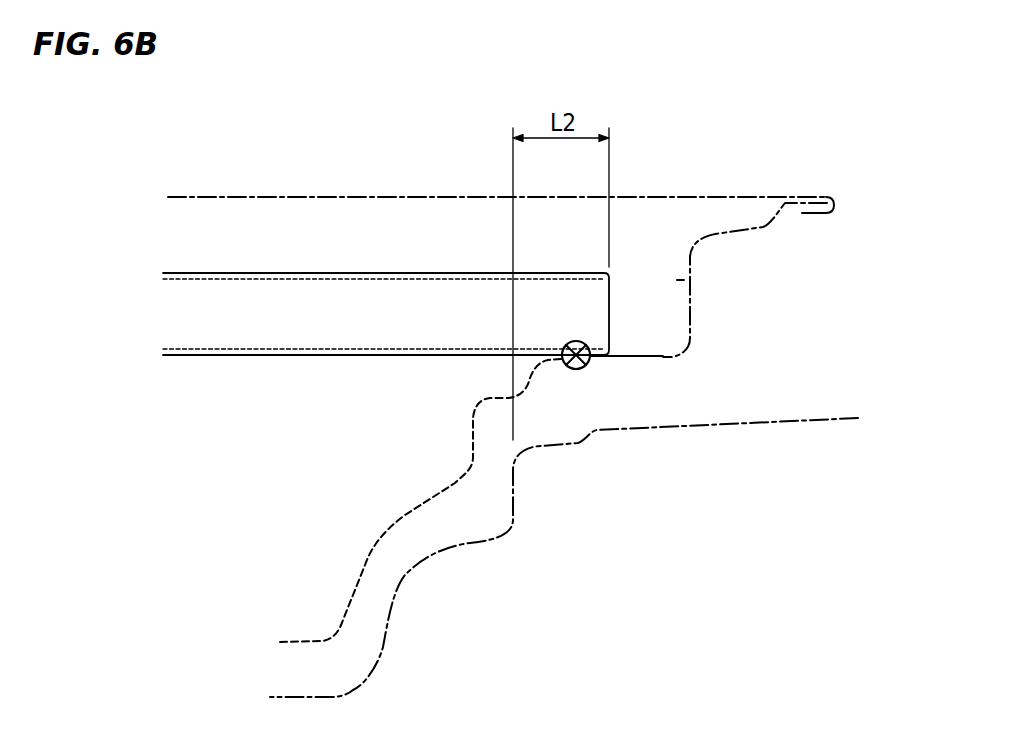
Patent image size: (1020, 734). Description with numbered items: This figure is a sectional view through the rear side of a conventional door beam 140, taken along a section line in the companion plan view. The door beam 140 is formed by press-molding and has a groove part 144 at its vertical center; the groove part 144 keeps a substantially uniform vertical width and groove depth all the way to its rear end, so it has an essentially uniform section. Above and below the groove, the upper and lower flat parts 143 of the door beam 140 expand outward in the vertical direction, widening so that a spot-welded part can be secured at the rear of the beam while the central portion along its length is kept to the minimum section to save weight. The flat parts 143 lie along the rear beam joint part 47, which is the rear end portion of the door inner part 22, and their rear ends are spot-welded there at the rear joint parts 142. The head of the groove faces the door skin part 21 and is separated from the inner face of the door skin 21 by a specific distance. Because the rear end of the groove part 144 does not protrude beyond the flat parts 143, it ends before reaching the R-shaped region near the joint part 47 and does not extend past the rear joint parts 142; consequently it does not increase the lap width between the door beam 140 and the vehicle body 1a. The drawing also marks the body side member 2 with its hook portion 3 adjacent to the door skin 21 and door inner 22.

The vehicle body 1a is at (727, 408).
The body side member 2 is at (530, 225).
The hook portion 3 is at (811, 167).
The door skin part 21 is at (726, 182).
The door inner part 22 is at (723, 249).
The rear beam joint part 47 is at (638, 357).
The door beam 140 is at (386, 234).
The rear joint parts 142 is at (576, 369).
The upper and lower flat parts 143 is at (447, 349).
The groove part 144 is at (378, 272).